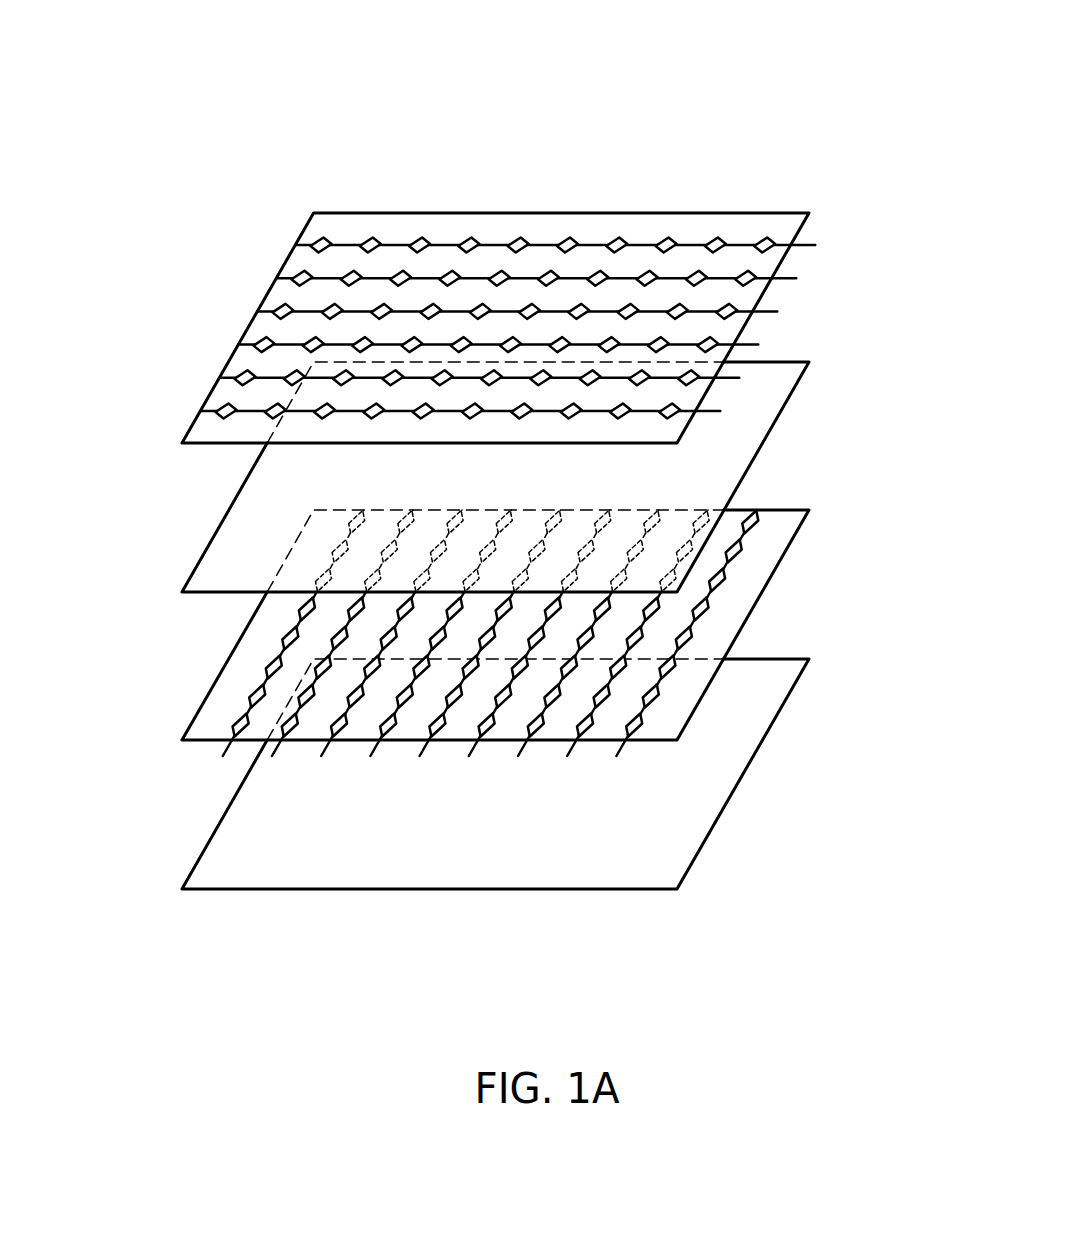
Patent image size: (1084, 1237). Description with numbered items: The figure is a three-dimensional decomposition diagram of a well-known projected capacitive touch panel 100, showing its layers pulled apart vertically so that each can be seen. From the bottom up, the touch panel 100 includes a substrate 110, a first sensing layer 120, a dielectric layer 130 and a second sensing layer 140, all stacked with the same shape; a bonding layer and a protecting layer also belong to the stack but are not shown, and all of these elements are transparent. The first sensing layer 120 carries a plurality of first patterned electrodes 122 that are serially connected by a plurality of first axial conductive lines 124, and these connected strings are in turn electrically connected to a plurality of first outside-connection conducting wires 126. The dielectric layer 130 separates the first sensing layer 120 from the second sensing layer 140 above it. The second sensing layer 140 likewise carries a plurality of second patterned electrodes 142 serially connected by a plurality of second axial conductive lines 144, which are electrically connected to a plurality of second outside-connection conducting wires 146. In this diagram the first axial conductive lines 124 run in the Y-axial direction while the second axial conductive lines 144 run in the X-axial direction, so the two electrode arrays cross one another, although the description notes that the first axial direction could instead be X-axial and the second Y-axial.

The projected capacitive touch panel 100 is at (842, 113).
The substrate 110 is at (247, 807).
The first sensing layer 120 is at (247, 658).
The first patterned electrodes 122 is at (747, 523).
The first axial conductive lines 124 is at (742, 543).
The first outside-connection conducting wires 126 is at (625, 747).
The dielectric layer 130 is at (247, 510).
The second sensing layer 140 is at (247, 362).
The second patterned electrodes 142 is at (767, 245).
The second axial conductive lines 144 is at (743, 247).
The second outside-connection conducting wires 146 is at (768, 273).